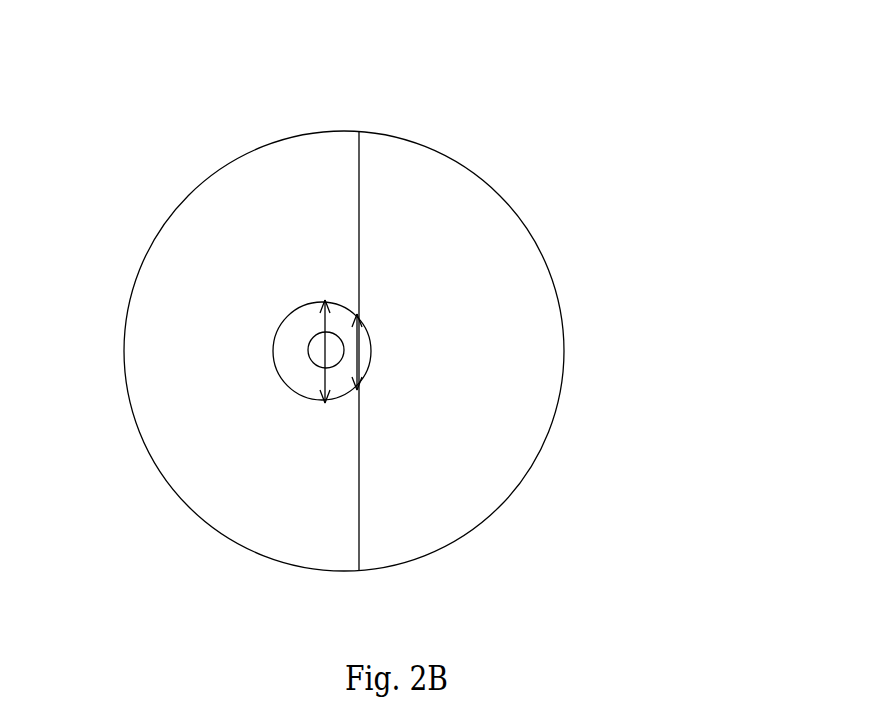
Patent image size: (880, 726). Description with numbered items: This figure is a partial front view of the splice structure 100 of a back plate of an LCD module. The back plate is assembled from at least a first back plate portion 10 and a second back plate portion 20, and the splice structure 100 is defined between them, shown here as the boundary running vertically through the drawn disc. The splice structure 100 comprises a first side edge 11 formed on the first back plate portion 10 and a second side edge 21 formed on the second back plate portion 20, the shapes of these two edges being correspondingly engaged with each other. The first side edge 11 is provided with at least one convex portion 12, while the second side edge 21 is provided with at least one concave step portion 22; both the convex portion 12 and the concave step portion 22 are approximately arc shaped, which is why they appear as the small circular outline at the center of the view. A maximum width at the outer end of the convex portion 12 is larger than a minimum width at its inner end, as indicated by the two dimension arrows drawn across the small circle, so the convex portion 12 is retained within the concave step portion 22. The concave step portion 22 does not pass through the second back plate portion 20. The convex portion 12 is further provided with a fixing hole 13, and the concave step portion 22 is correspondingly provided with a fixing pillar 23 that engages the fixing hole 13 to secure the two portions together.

The splice structure 100 is at (717, 72).
The first back plate portion 10 is at (512, 168).
The second back plate portion 20 is at (168, 162).
The first side edge 11 is at (407, 297).
The second side edge 21 is at (360, 187).
The convex portion 12 is at (308, 320).
The concave step portion 22 is at (280, 375).
The fixing hole 13 is at (357, 463).
The fixing pillar 23 is at (333, 370).